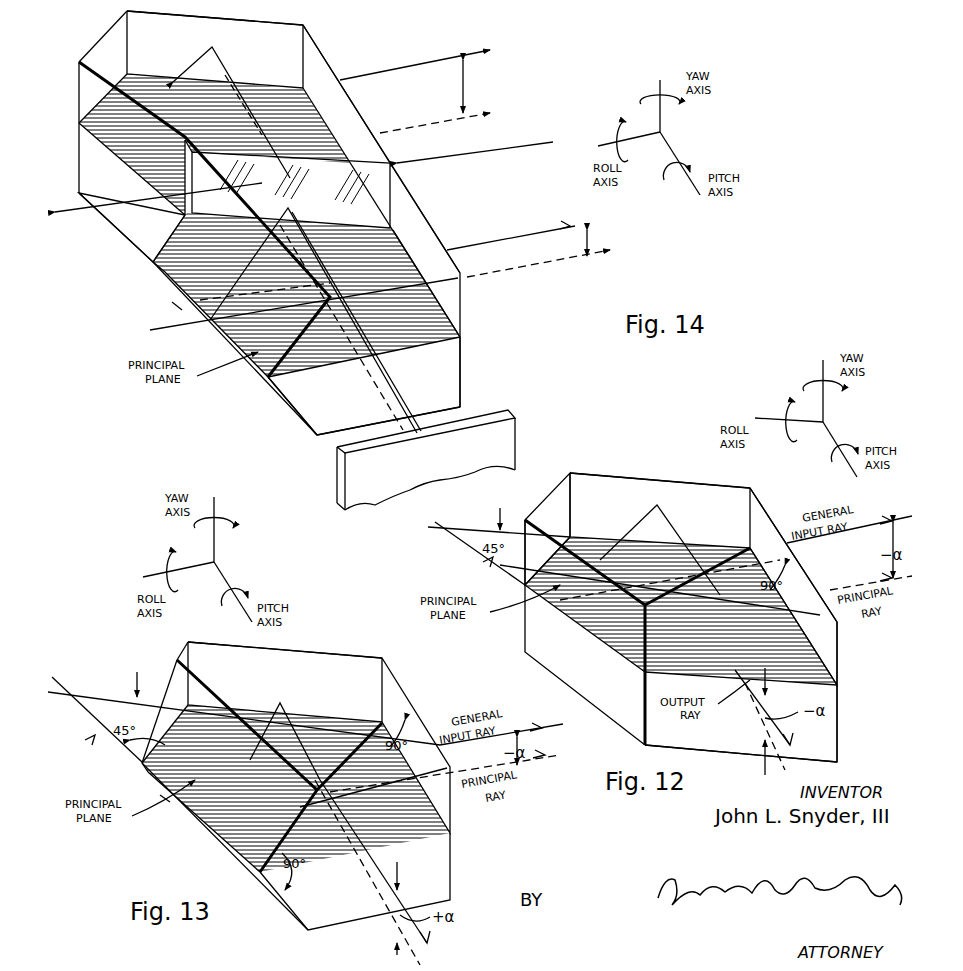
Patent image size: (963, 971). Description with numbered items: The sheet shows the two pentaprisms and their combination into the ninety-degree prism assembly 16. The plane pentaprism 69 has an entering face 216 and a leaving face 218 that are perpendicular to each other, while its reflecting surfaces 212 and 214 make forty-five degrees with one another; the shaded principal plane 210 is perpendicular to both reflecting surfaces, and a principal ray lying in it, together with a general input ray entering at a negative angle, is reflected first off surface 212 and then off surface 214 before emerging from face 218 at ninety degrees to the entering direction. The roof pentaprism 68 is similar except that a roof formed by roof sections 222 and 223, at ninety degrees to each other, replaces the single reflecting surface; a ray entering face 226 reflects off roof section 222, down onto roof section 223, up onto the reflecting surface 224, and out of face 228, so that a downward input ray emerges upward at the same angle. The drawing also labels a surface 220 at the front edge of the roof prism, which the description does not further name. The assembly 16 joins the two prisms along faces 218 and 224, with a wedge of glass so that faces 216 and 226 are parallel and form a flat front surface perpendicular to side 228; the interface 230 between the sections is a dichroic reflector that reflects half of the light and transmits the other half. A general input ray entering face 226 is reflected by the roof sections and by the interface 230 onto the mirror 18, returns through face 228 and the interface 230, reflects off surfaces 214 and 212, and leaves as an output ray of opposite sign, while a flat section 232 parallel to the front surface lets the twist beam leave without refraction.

In FIG. 14, the 90° prism assembly 16 is at (256, 411).
In FIG. 14, the mirror 18 is at (465, 440).
In FIG. 14, the roof pentaprism 68 is at (465, 234).
In FIG. 13, the roof pentaprism 68 is at (243, 644).
In FIG. 14, the plane pentaprism 69 is at (362, 74).
In FIG. 12, the plane pentaprism 69 is at (666, 473).
In FIG. 14, the principal plane 210 is at (107, 138).
In FIG. 12, the principal plane 210 is at (548, 618).
In FIG. 14, the reflecting surface 212 is at (92, 118).
In FIG. 12, the reflecting surface 212 is at (575, 672).
In FIG. 14, the reflecting surface 214 is at (300, 32).
In FIG. 12, the reflecting surface 214 is at (700, 490).
In FIG. 14, the entering face 216 is at (336, 56).
In FIG. 12, the entering face 216 is at (758, 513).
In FIG. 12, the leaving face 218 is at (825, 729).
In FIG. 14, the front edge face 220 is at (178, 284).
In FIG. 13, the front edge face 220 is at (185, 808).
In FIG. 14, the roof section 222 is at (150, 236).
In FIG. 13, the roof section 222 is at (138, 757).
In FIG. 14, the roof section 223 is at (172, 302).
In FIG. 13, the roof section 223 is at (150, 778).
In FIG. 13, the reflecting surface 224 is at (338, 670).
In FIG. 14, the entering face 226 is at (405, 202).
In FIG. 13, the entering face 226 is at (398, 700).
In FIG. 14, the leaving face 228 is at (450, 357).
In FIG. 13, the leaving face 228 is at (440, 865).
In FIG. 14, the interface 230 is at (365, 160).
In FIG. 14, the flat section 232 is at (160, 172).